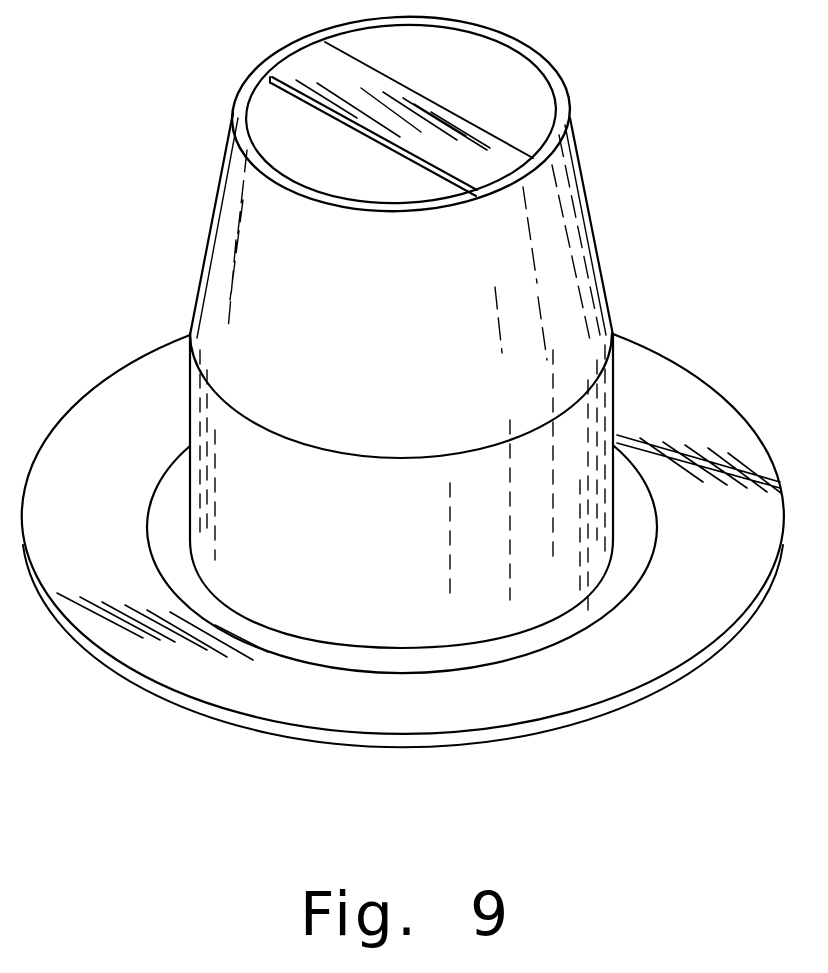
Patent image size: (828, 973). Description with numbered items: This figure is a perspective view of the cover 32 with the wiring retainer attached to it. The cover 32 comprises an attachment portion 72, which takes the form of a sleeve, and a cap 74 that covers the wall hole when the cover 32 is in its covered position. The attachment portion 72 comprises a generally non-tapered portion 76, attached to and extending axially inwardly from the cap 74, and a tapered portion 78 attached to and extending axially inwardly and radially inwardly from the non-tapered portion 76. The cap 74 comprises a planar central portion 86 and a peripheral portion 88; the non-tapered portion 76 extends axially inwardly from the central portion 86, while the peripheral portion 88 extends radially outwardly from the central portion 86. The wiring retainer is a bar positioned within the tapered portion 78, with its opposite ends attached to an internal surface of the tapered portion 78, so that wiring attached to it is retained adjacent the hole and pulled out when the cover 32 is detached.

The cover 32 is at (250, 253).
The attachment portion 72 is at (227, 320).
The cap 74 is at (506, 697).
The non-tapered portion 76 is at (223, 445).
The tapered portion 78 is at (238, 182).
The central portion 86 is at (413, 653).
The peripheral portion 88 is at (413, 718).